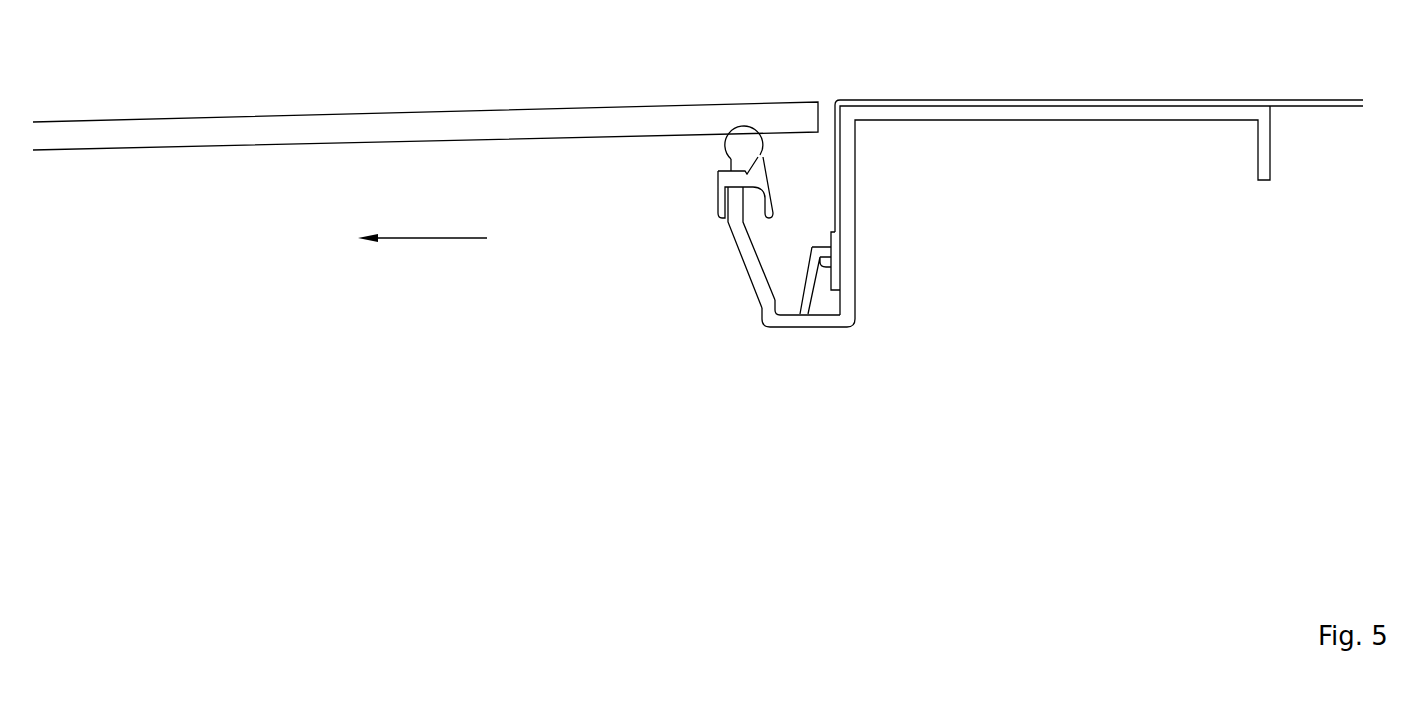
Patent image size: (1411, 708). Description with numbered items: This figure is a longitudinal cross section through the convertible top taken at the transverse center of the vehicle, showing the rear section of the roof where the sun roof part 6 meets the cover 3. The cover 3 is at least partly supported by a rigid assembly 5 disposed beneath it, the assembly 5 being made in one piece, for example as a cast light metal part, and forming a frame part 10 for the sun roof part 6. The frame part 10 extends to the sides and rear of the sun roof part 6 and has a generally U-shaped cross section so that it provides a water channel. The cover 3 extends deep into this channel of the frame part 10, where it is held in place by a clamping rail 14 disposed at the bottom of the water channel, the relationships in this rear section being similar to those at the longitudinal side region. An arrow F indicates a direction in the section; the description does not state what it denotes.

The sun roof part 6 is at (505, 113).
The cover 3 is at (907, 100).
The assembly 5 is at (812, 327).
The frame part 10 is at (845, 275).
The clamping rail 14 is at (805, 272).
The force direction arrow F is at (425, 240).